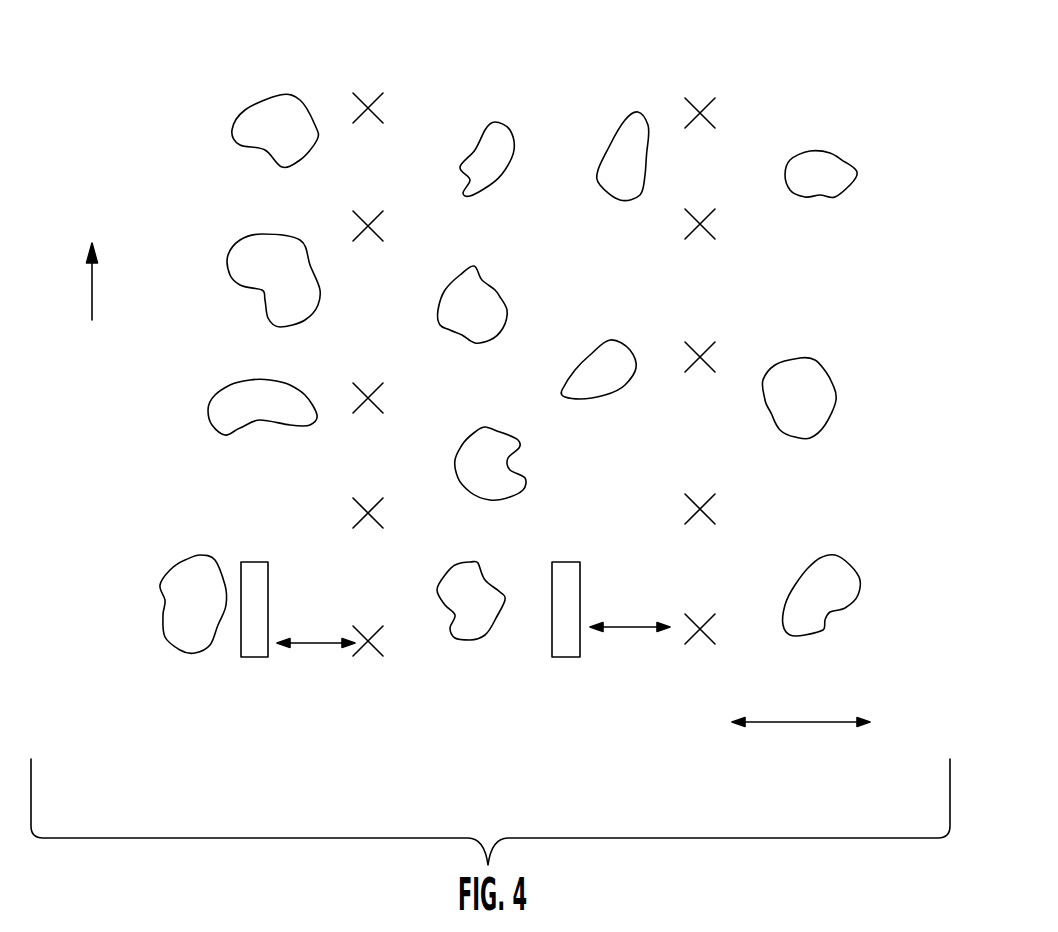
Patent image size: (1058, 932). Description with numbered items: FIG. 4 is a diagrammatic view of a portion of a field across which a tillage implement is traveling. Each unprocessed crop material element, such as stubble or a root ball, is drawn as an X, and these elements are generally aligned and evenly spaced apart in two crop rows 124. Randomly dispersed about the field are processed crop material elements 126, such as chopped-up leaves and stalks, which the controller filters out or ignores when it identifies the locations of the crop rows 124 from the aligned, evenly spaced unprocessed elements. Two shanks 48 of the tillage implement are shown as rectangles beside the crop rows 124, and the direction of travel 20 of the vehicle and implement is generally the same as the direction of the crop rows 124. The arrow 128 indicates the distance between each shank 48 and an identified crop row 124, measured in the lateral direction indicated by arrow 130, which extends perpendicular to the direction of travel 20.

The crop row 124 is at (382, 93).
The processed crop material element 126 is at (504, 127).
The arrow indicating distance 128 is at (310, 645).
The arrow indicating lateral direction 130 is at (782, 723).
The shank 48 is at (253, 657).
The direction of travel 20 is at (90, 277).